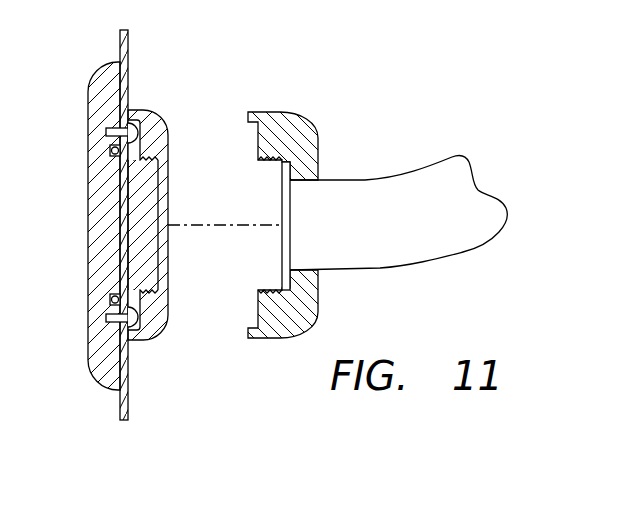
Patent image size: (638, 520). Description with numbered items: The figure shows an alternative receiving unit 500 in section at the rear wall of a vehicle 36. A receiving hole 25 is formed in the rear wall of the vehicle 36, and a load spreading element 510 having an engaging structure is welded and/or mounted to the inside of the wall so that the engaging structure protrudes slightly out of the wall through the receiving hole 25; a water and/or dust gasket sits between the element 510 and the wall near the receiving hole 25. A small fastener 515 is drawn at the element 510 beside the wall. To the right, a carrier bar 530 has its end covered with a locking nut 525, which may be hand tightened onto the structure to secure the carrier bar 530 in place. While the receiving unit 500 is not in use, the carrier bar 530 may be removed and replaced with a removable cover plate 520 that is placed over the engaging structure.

The receiving unit 500 is at (394, 46).
The load spreading element 510 is at (100, 78).
The vehicle 36 is at (128, 77).
The nut 515 is at (110, 150).
The receiving hole 25 is at (115, 177).
The removable cover plate 520 is at (160, 332).
The locking nut 525 is at (308, 120).
The carrier bar 530 is at (345, 180).